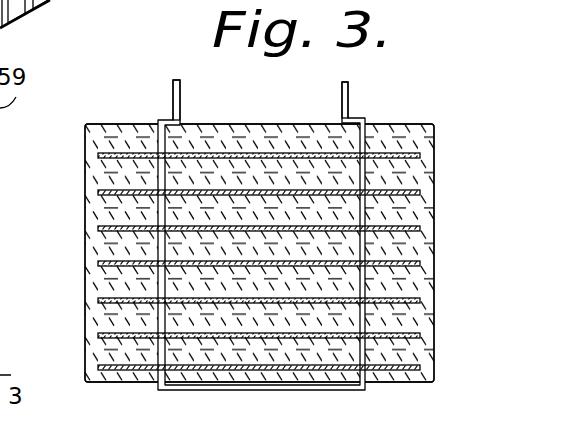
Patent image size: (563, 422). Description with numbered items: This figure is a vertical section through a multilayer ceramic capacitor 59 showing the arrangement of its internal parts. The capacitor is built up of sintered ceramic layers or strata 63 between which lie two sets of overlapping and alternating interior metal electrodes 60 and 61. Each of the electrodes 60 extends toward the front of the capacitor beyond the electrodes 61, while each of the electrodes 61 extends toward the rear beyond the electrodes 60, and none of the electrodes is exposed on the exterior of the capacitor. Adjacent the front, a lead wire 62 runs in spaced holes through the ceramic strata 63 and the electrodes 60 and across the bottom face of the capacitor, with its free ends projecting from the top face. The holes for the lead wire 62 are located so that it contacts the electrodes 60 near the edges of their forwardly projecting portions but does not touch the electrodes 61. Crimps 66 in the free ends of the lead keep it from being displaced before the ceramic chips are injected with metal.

The multilayer ceramic capacitor 59 is at (87, 260).
The interior metal electrodes 60 is at (100, 191).
The interior metal electrodes 61 is at (97, 240).
The lead wire 62 is at (181, 84).
The sintered ceramic layers or strata 63 is at (100, 290).
The crimps 66 is at (161, 121).